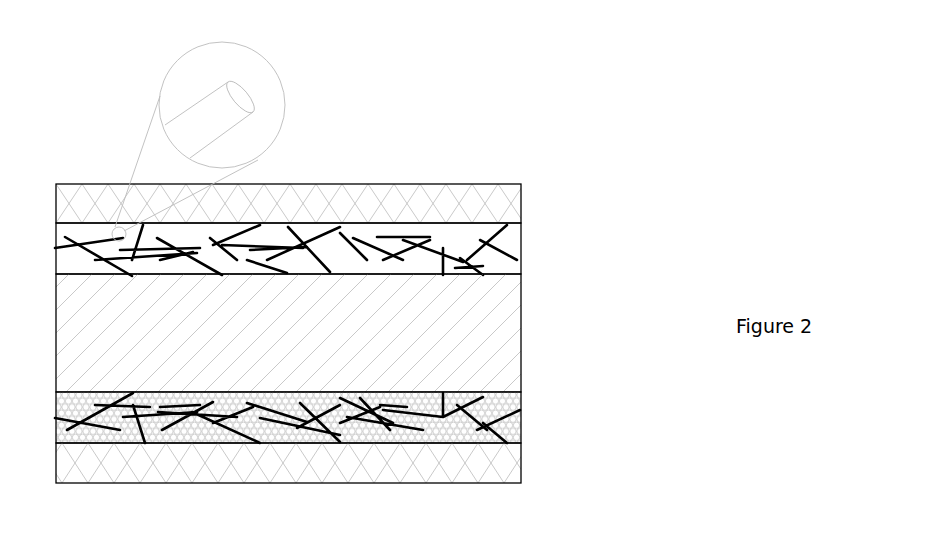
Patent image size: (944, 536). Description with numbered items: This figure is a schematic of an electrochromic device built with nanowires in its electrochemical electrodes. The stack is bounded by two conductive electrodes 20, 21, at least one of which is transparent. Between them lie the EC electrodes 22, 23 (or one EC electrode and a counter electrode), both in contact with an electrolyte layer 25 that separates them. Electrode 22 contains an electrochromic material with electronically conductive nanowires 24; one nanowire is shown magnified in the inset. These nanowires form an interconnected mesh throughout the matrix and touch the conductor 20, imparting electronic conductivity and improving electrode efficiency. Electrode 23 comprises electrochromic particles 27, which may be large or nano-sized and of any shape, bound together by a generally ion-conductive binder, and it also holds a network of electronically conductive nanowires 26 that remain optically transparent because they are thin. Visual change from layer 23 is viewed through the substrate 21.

The conductive electrode 20 is at (507, 206).
The conductive electrode 21 is at (503, 466).
The EC electrode 22 is at (511, 238).
The EC electrode 23 is at (525, 415).
The electronically conductive nanowires 24 is at (243, 119).
The electrolyte layer 25 is at (512, 327).
The electronically conductive nanowires 26 is at (510, 437).
The particles 27 is at (510, 398).